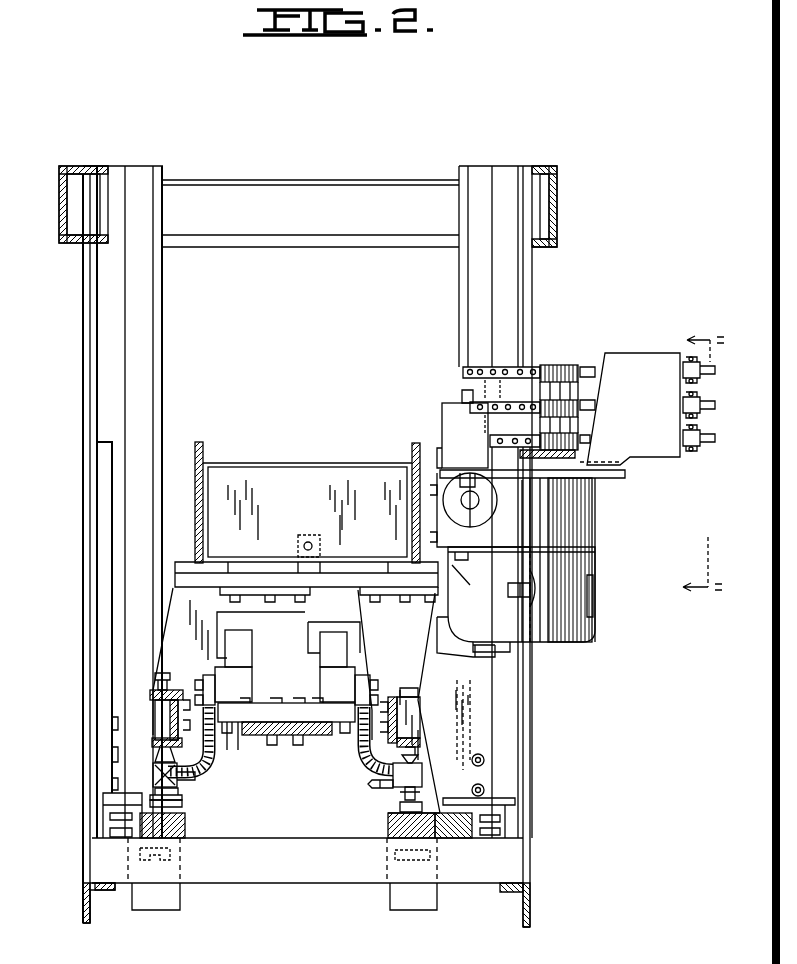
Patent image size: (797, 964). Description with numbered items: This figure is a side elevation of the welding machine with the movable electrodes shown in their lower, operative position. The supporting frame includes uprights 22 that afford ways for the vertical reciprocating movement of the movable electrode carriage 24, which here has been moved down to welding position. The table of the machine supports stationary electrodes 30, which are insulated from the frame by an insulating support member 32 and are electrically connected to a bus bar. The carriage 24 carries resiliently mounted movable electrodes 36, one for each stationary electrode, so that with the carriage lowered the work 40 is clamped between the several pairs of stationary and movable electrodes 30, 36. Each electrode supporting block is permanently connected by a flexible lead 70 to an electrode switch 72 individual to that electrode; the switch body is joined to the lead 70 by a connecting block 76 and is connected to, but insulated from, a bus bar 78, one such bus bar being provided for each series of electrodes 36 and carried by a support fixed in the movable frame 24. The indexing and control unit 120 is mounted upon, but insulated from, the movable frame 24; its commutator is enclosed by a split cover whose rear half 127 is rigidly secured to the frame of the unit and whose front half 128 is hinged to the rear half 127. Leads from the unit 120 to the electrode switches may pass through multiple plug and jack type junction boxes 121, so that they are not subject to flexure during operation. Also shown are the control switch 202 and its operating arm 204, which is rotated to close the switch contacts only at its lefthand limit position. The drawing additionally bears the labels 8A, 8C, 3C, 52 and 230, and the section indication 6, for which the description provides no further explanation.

The uprights 22 is at (138, 353).
The movable electrode carriage 24 is at (226, 459).
The electrode switch 72 is at (319, 665).
The connecting block 76 is at (212, 672).
The bus bar 78 is at (248, 715).
The insulating plate 8A is at (283, 717).
The bolt assembly 52 is at (165, 710).
The flexible lead 70 is at (200, 764).
The connector block 8C is at (185, 782).
The nut 3C is at (180, 800).
The stationary electrodes 30 is at (190, 810).
The insulating support member 32 is at (190, 826).
The movable electrodes 36 is at (403, 795).
The work 40 is at (420, 800).
The plate stack 230 is at (545, 367).
The control switch 202 is at (442, 413).
The operating arm 204 is at (497, 498).
The indexing and control unit 120 is at (648, 349).
The rear half 127 is at (490, 620).
The junction boxes 121 is at (474, 636).
The front half 128 is at (566, 635).
The section line 6 is at (688, 466).